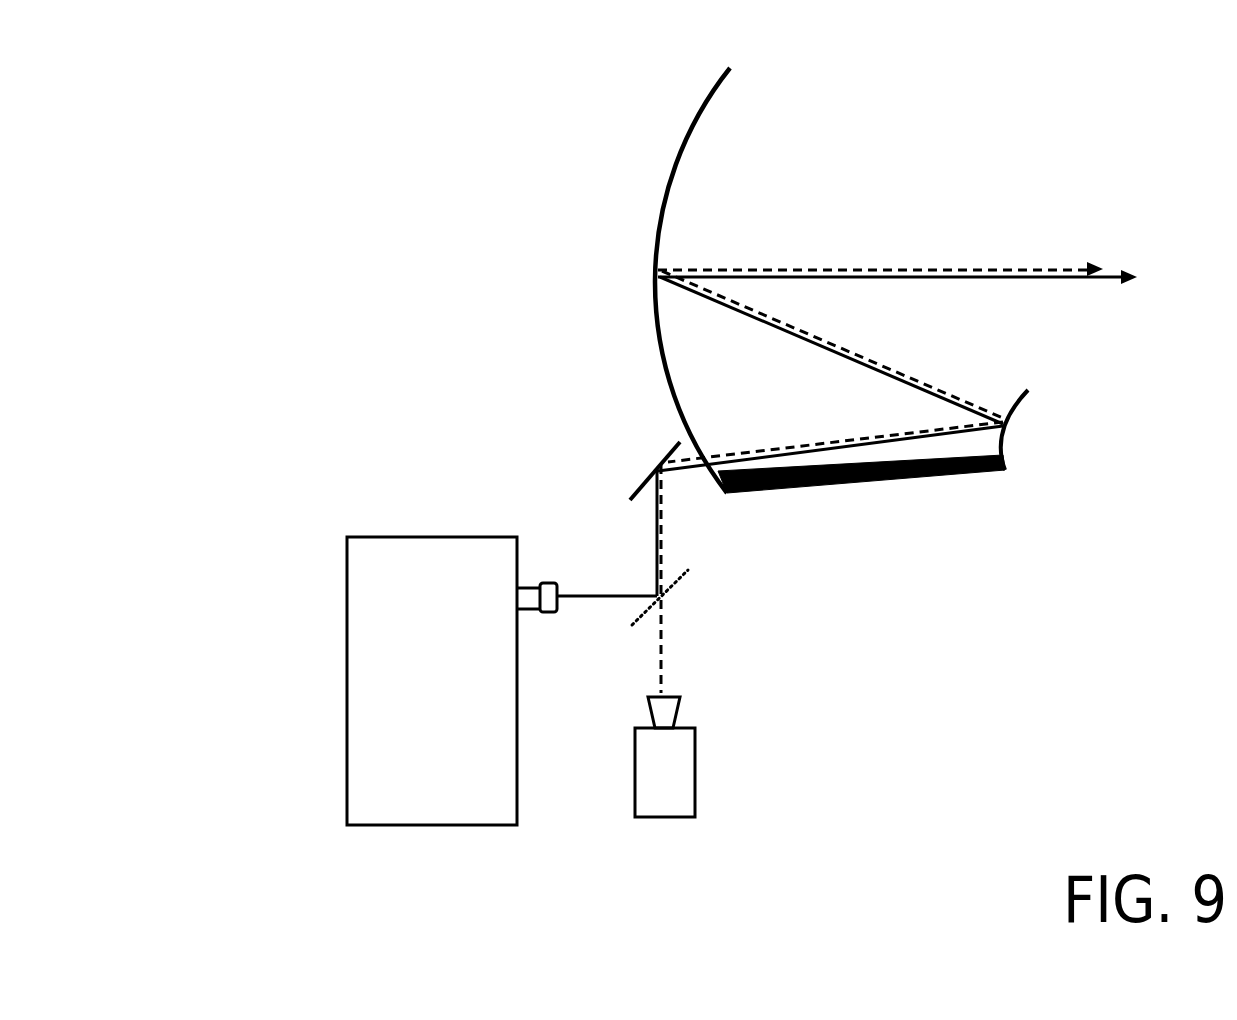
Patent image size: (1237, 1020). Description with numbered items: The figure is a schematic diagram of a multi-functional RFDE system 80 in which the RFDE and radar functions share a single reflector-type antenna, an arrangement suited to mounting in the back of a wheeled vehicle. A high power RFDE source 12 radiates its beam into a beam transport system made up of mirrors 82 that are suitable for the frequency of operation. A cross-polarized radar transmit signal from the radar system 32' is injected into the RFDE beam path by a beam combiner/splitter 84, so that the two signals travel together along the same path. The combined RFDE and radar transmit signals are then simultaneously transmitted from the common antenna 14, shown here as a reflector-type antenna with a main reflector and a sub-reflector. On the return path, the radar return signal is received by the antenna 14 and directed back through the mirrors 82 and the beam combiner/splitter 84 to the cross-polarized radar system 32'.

The multi-functional RFDE system 80 is at (268, 220).
The common antenna 14 is at (617, 236).
The mirrors 82 is at (616, 468).
The beam combiner/splitter 84 is at (692, 596).
The high power RFDE source 12 is at (347, 652).
The cross-polarized radar system 32' is at (683, 795).